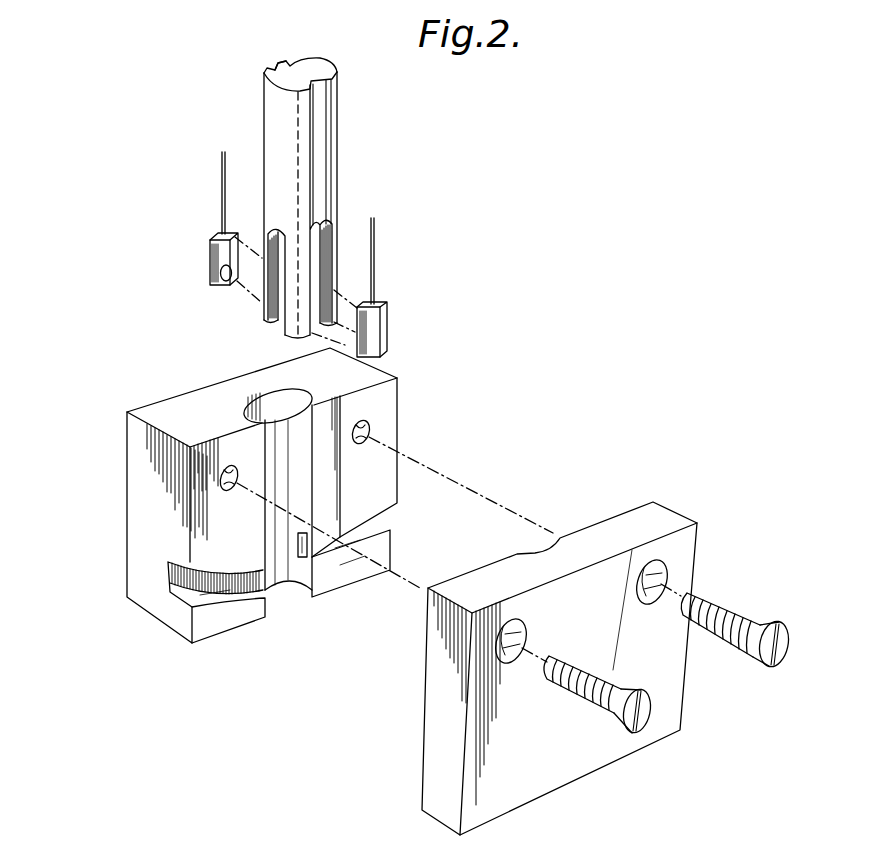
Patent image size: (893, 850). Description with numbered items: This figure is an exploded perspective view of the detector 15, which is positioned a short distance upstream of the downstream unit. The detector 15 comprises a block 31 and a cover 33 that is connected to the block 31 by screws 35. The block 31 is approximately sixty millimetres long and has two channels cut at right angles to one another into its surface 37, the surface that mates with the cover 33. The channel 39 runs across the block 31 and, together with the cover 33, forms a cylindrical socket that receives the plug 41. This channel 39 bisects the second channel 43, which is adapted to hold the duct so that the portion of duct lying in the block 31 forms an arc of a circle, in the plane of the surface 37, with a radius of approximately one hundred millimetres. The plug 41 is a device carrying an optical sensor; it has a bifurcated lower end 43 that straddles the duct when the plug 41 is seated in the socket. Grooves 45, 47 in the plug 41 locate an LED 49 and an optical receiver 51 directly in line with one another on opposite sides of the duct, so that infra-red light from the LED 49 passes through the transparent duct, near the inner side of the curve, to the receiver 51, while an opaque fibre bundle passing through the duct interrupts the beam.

The detector 15 is at (113, 505).
The block 31 is at (153, 600).
The cover 33 is at (588, 537).
The screws 35 is at (640, 733).
The surface 37 is at (388, 407).
The channel 39 is at (265, 400).
The plug 41 is at (313, 57).
The second channel 43 is at (263, 322).
The groove 45 is at (281, 68).
The groove 47 is at (318, 98).
The LED 49 is at (210, 277).
The optical receiver 51 is at (388, 322).